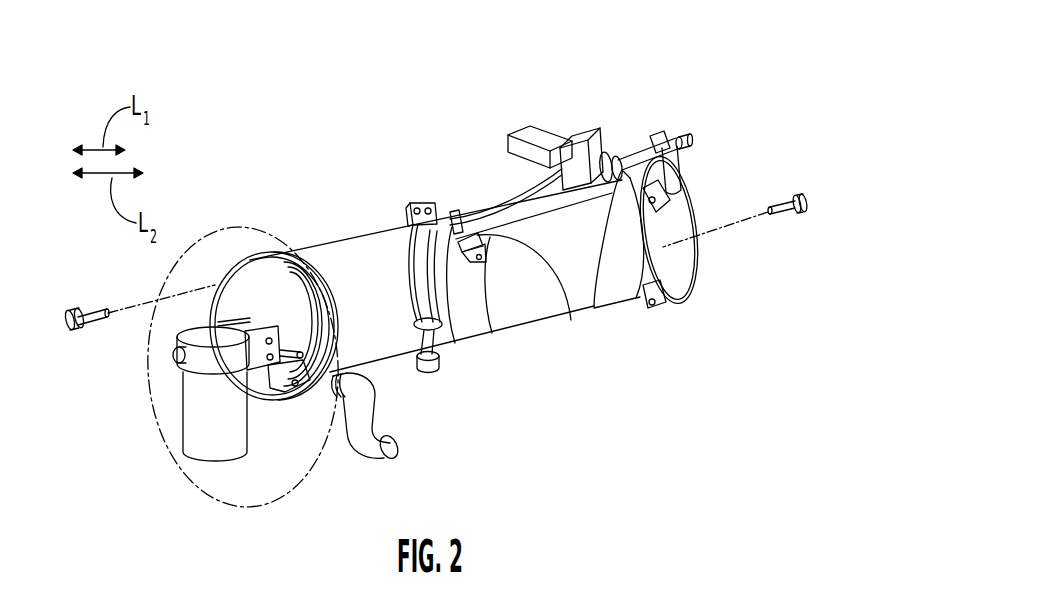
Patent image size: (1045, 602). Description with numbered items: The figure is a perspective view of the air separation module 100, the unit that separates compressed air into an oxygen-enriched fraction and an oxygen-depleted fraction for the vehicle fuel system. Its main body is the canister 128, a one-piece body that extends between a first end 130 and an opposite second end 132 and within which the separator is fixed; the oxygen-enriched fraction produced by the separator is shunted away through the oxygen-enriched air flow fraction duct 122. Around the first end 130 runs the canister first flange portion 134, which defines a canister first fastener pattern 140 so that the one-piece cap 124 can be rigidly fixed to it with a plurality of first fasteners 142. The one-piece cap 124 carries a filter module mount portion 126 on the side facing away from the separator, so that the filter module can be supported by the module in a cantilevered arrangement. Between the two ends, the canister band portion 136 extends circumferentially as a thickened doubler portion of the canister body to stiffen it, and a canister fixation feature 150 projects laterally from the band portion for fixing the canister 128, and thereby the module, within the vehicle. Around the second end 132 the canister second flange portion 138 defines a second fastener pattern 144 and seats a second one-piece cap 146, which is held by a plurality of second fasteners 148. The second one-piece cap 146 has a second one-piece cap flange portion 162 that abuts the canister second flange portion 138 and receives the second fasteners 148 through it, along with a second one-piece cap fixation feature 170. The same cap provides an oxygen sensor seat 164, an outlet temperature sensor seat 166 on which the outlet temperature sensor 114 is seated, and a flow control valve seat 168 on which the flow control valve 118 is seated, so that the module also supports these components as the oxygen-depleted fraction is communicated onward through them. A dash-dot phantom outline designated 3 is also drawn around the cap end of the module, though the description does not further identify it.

The housing outline (phantom) 3 is at (152, 412).
The air separation module 100 is at (288, 516).
The outlet temperature sensor 114 is at (680, 136).
The flow control valve 118 is at (522, 126).
The oxygen-enriched air flow fraction duct 122 is at (310, 425).
The one-piece cap 124 is at (237, 290).
The filter module mount portion 126 is at (262, 322).
The canister 128 is at (516, 312).
The first end 130 is at (296, 229).
The second end 132 is at (572, 128).
The canister first flange portion 134 is at (296, 272).
The canister band portion 136 is at (490, 204).
The canister second flange portion 138 is at (600, 313).
The canister first fastener pattern 140 is at (243, 240).
The first fasteners 142 is at (112, 310).
The second fastener pattern 144 is at (682, 253).
The second one-piece cap 146 is at (678, 188).
The second fasteners 148 is at (738, 216).
The canister fixation feature 150 is at (563, 304).
The second one-piece cap flange portion 162 is at (692, 277).
The oxygen sensor seat 164 is at (678, 159).
The outlet temperature sensor seat 166 is at (653, 140).
The flow control valve seat 168 is at (612, 158).
The second one-piece cap fixation feature 170 is at (653, 318).